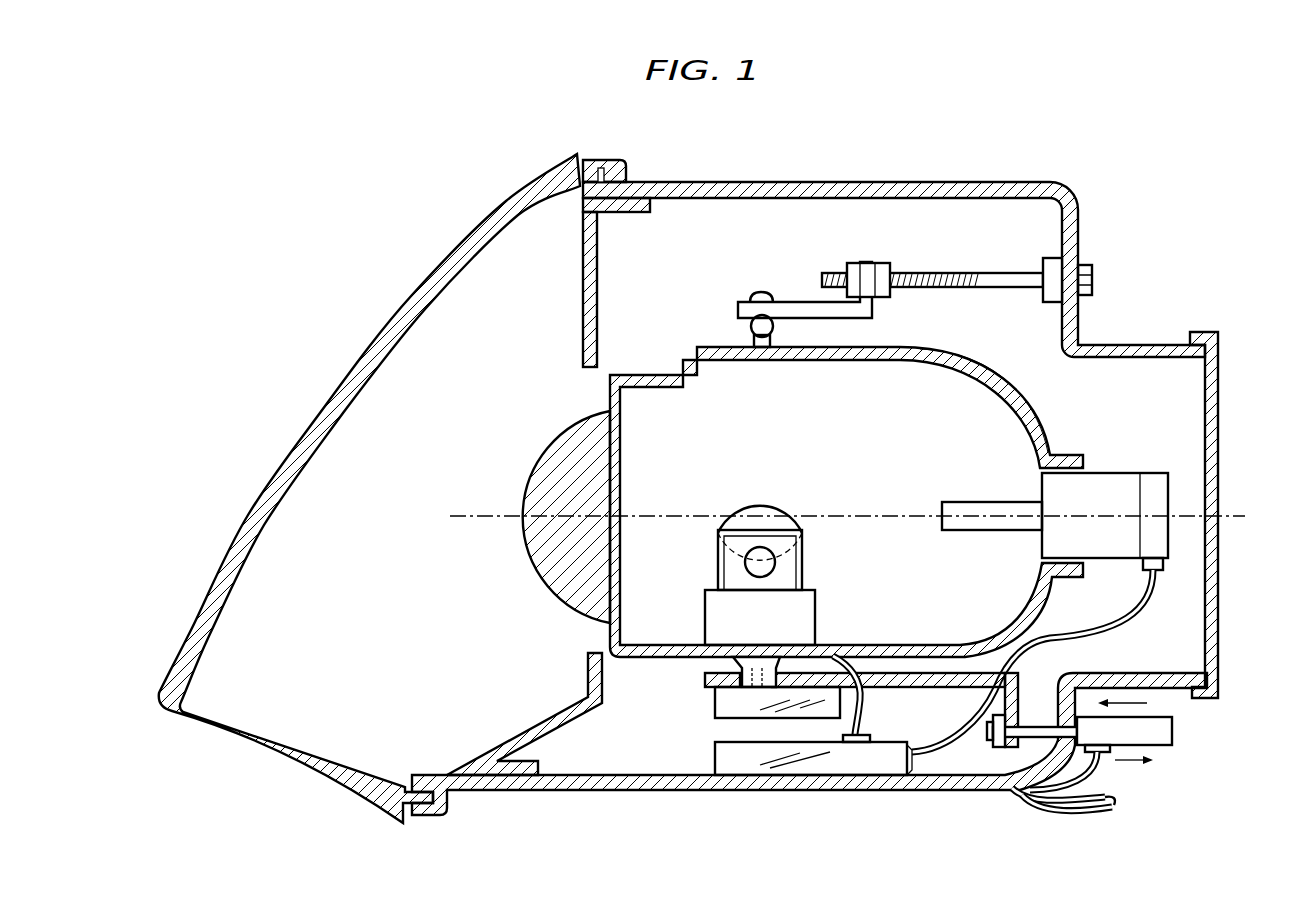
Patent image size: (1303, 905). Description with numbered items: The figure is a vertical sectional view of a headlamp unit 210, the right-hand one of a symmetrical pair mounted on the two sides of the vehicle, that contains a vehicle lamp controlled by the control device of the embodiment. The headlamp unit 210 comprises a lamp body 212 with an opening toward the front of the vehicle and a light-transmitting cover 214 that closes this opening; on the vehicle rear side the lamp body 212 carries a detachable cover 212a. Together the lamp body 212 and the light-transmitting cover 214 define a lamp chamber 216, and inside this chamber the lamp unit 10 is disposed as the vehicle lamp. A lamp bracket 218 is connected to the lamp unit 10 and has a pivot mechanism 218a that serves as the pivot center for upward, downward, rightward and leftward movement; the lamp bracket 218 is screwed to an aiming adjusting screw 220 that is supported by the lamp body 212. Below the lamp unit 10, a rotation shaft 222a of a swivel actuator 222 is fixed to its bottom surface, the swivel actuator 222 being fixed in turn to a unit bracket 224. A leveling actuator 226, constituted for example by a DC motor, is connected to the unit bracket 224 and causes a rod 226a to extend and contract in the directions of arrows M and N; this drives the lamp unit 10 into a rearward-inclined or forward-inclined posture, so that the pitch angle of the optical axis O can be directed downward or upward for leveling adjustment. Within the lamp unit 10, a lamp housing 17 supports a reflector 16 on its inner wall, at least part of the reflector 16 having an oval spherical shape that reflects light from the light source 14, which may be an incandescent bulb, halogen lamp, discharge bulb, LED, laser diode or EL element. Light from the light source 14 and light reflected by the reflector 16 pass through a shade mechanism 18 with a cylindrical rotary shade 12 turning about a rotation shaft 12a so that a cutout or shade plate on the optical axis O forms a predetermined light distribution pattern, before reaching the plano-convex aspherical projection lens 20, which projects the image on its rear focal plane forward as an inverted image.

The lamp unit 10 is at (658, 372).
The rotary shade 12 is at (772, 522).
The rotation shaft 12a is at (777, 560).
The light source 14 is at (985, 508).
The reflector 16 is at (905, 362).
The lamp housing 17 is at (985, 380).
The shade mechanism 18 is at (757, 505).
The projection lens 20 is at (548, 440).
The headlamp unit 210 is at (960, 180).
The lamp body 212 is at (785, 190).
The detachable cover 212a is at (1203, 332).
The light-transmitting cover 214 is at (418, 290).
The lamp chamber 216 is at (537, 329).
The lamp bracket 218 is at (812, 302).
The pivot mechanism 218a is at (750, 320).
The aiming adjusting screw 220 is at (1003, 273).
The swivel actuator 222 is at (718, 702).
The rotation shaft 222a is at (742, 672).
The unit bracket 224 is at (893, 680).
The leveling actuator 226 is at (1174, 734).
The rod 226a is at (1045, 727).
The optical axis O is at (465, 520).
The arrow M is at (1132, 702).
The arrow N is at (1144, 760).